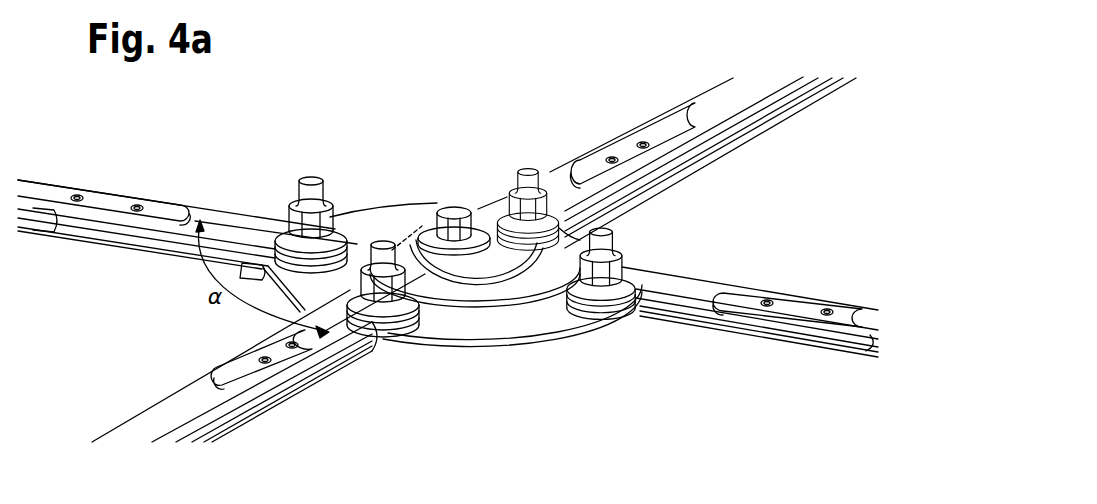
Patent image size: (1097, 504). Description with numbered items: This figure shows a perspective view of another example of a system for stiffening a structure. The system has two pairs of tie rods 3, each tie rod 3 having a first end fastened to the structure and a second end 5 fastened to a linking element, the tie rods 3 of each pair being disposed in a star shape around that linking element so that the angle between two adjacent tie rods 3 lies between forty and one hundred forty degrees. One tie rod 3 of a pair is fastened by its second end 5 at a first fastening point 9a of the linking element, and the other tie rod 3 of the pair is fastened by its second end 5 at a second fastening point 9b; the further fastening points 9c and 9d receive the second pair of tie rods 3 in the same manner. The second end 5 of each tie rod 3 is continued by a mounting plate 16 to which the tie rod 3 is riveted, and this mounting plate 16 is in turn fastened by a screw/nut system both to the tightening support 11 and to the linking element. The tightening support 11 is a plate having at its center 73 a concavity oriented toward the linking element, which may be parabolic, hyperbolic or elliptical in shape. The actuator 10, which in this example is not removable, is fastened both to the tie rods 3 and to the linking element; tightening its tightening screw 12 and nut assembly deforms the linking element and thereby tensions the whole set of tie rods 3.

The tie rod 3 is at (40, 185).
The second end 5 is at (110, 202).
The first fastening point 9a is at (305, 228).
The second fastening point 9b is at (610, 278).
The screw connection 9c is at (393, 320).
The screw connection 9d is at (527, 197).
The actuator 10 is at (394, 182).
The tightening support 11 is at (518, 317).
The tightening screw 12 is at (455, 210).
The mounting plate 16 is at (230, 213).
The center 73 is at (453, 270).